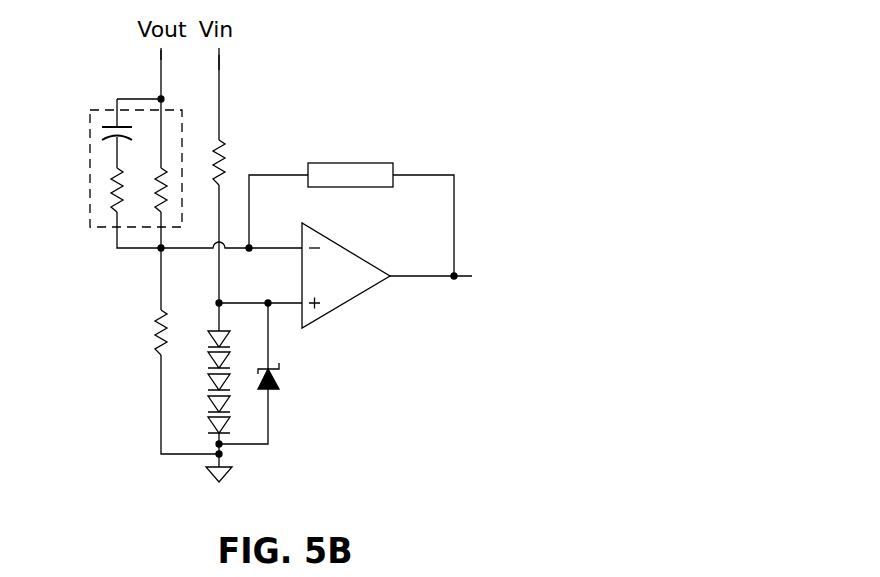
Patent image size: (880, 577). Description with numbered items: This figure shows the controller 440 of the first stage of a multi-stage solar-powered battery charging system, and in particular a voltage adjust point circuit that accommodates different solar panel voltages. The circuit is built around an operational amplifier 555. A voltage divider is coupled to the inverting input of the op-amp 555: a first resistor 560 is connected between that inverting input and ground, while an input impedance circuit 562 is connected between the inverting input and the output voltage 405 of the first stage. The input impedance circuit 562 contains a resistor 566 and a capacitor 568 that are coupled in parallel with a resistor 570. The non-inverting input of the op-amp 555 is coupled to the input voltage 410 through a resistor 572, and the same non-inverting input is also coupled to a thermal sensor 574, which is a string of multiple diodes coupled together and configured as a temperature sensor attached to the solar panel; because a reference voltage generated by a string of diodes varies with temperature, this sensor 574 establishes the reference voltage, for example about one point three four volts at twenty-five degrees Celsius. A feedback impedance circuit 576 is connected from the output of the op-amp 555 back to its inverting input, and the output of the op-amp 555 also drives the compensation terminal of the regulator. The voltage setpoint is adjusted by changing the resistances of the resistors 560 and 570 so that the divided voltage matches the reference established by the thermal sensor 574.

The first output voltage 405 is at (161, 57).
The input voltage 410 is at (219, 62).
The controller 440 is at (432, 68).
The input impedance circuit 562 is at (90, 110).
The capacitor 568 is at (104, 138).
The resistor 566 is at (112, 203).
The resistor 570 is at (158, 202).
The resistor 572 is at (222, 151).
The feedback impedance circuit 576 is at (374, 163).
The operational amplifier 555 is at (350, 248).
The first resistor 560 is at (158, 340).
The thermal sensor 574 is at (198, 378).